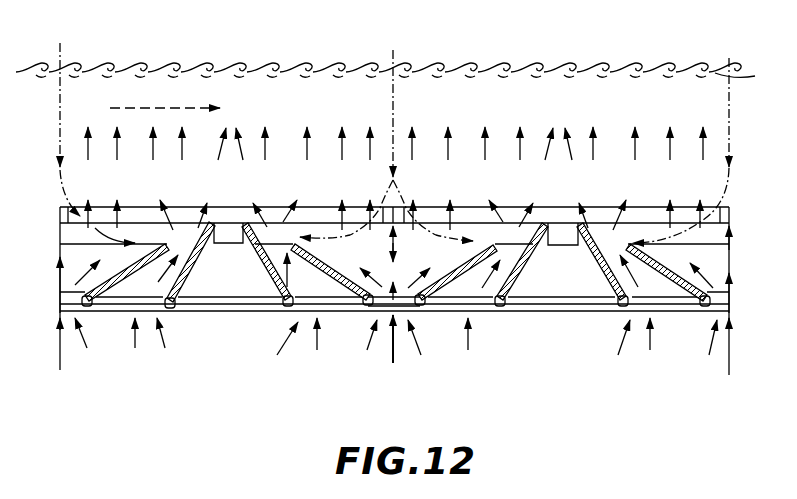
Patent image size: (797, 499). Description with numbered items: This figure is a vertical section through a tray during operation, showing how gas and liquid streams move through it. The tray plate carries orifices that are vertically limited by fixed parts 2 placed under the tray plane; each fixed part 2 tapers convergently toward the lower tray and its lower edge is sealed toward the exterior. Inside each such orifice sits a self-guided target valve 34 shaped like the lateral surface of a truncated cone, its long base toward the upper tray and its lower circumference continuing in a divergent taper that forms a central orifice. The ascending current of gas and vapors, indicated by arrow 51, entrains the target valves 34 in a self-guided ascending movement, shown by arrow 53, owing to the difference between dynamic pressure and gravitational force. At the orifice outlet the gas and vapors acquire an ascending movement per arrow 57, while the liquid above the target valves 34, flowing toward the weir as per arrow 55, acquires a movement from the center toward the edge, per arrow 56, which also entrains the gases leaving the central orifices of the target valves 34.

The fixed part 2 is at (178, 292).
The self-guided target valve 34 is at (348, 293).
The ascending current of gas and vapors 51 is at (487, 324).
The self-guided ascending movement of target valves 53 is at (388, 236).
The liquid flow toward the weir 55 is at (182, 108).
The center-to-edge movement of liquid and gases 56 is at (455, 237).
The ascending movement of gas at orifice outlet 57 is at (195, 215).